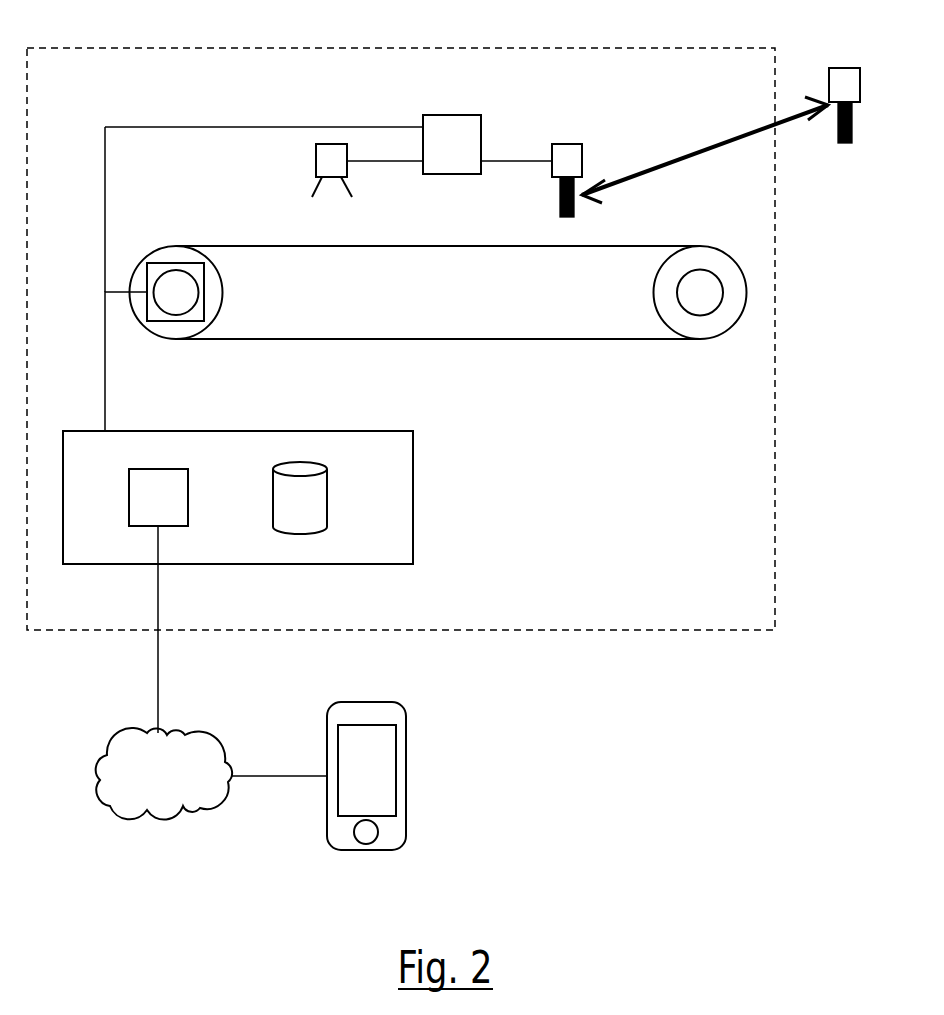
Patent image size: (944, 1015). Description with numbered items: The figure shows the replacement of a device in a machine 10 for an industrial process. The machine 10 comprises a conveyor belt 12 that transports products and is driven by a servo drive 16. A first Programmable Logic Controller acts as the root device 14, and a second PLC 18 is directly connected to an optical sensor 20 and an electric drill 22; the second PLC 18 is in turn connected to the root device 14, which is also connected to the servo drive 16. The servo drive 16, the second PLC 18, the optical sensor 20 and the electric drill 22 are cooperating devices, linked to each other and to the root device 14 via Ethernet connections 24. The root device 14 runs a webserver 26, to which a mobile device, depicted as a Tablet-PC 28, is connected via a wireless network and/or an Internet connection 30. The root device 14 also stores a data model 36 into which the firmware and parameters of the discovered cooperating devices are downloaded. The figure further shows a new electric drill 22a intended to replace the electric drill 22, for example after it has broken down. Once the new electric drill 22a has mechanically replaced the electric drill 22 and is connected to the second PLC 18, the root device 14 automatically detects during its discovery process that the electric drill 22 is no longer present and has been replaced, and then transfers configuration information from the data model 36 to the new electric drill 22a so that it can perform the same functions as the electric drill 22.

The machine 10 is at (647, 48).
The conveyor belt 12 is at (640, 247).
The root device 14 is at (415, 462).
The servo drive 16 is at (177, 321).
The second PLC 18 is at (487, 144).
The optical sensor 20 is at (316, 163).
The electric drill 22 is at (567, 143).
The new electric drill 22a is at (845, 66).
The Ethernet connections 24 is at (218, 127).
The webserver 26 is at (158, 601).
The Tablet-PC 28 is at (407, 757).
The Internet connection 30 is at (211, 774).
The data model 36 is at (300, 498).